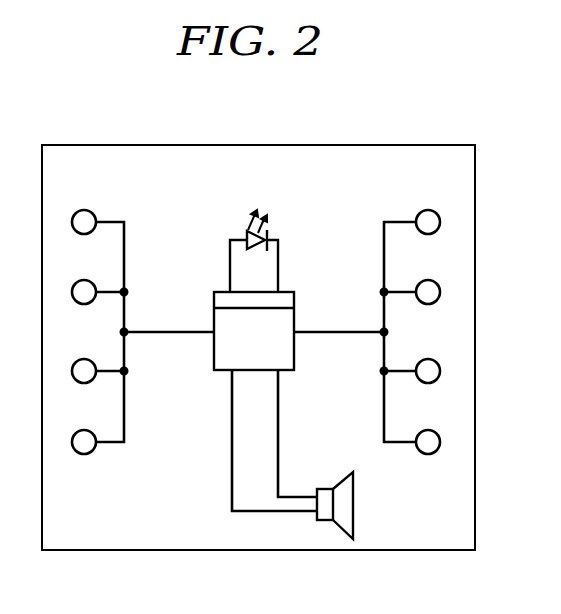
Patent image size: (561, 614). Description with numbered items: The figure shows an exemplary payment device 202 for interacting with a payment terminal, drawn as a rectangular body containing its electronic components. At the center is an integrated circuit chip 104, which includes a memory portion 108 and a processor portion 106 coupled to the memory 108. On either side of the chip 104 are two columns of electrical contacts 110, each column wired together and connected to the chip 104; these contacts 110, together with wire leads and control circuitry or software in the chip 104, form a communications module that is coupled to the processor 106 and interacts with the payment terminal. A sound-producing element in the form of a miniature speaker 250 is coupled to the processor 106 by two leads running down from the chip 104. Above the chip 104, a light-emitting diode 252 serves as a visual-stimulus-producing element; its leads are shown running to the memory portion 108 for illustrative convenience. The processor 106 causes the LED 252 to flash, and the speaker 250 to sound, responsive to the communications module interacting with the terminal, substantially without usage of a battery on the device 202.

The payment device 202 is at (258, 145).
The electrical contacts 110 is at (426, 210).
The integrated circuit chip 104 is at (216, 360).
The memory portion 108 is at (221, 300).
The processor portion 106 is at (276, 345).
The light-emitting diode 252 is at (246, 238).
The miniature speaker 250 is at (354, 507).